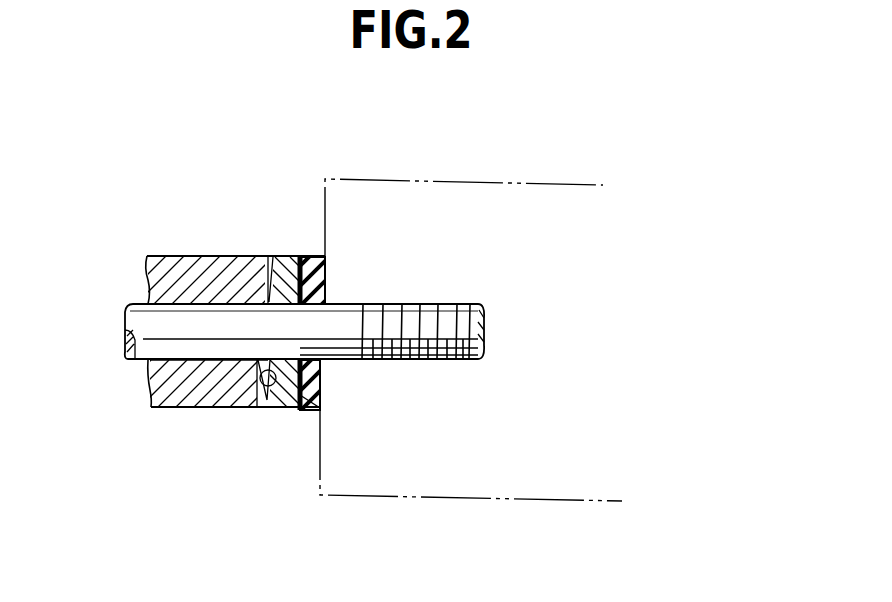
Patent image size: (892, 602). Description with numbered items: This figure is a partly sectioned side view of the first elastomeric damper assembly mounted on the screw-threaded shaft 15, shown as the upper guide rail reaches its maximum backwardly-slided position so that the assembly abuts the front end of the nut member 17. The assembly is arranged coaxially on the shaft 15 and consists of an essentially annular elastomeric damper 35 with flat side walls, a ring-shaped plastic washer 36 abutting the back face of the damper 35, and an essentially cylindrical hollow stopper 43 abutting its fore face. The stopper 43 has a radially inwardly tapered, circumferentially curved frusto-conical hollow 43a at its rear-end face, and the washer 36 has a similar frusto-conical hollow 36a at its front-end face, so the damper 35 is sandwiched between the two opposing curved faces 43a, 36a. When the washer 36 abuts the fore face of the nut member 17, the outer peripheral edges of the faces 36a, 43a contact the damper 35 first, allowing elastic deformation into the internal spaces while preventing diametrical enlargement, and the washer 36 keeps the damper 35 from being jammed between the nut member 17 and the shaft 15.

The screw-threaded shaft 15 is at (132, 317).
The nut member 17 is at (392, 472).
The elastomeric damper 35 is at (283, 257).
The plastic washer 36 is at (315, 257).
The frusto-conical hollow curved face 36a is at (297, 393).
The stopper 43 is at (202, 255).
The frusto-conical hollow curved face 43a is at (267, 396).